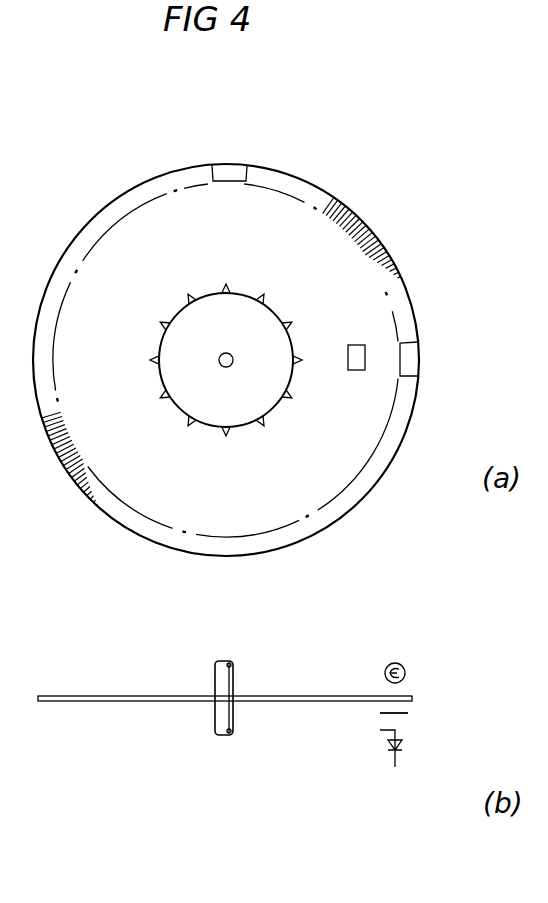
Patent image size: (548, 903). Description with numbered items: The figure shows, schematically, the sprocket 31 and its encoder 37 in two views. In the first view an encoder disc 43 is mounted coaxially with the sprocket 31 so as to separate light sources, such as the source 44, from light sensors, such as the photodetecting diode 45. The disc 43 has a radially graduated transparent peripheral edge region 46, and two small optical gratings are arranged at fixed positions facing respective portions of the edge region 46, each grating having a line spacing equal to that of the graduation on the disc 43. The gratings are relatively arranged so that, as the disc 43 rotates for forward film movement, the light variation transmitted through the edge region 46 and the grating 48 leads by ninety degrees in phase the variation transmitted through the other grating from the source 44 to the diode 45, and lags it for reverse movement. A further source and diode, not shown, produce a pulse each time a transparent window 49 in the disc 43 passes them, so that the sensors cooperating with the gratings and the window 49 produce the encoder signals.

The sprocket 31 is at (237, 415).
The encoder 37 is at (192, 720).
The encoder disc 43 is at (415, 307).
The light source 44 is at (400, 663).
The photodetecting diode 45 is at (402, 745).
The radially graduated transparent peripheral edge region 46 is at (313, 197).
The optical grating 48 is at (229, 170).
The transparent window 49 is at (352, 370).